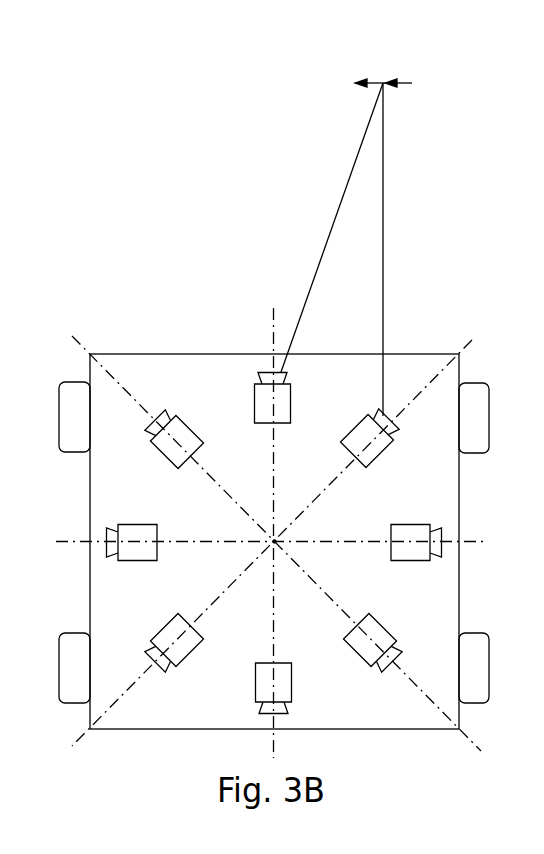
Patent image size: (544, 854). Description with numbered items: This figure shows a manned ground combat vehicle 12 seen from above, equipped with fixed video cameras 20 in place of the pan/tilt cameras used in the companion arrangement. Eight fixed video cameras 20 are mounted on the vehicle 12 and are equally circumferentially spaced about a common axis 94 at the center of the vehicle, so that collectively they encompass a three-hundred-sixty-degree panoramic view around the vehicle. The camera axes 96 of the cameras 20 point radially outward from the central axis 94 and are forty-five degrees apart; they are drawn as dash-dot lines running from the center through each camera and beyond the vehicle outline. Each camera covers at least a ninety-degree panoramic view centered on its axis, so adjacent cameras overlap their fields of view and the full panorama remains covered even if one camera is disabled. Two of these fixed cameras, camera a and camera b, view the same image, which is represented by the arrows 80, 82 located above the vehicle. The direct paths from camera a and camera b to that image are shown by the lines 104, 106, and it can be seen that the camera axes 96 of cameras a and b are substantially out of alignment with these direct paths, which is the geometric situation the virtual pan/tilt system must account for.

The manned ground combat vehicle 12 is at (137, 344).
The video cameras 20 is at (274, 543).
The common axis 94 is at (277, 539).
The camera axes 96 is at (88, 353).
The line between camera a and the image 104 is at (347, 181).
The line between camera b and the image 106 is at (384, 176).
The arrow representing the image 80 is at (373, 81).
The arrow representing the image 82 is at (399, 81).
The fixed video camera a is at (260, 412).
The fixed video camera b is at (354, 449).